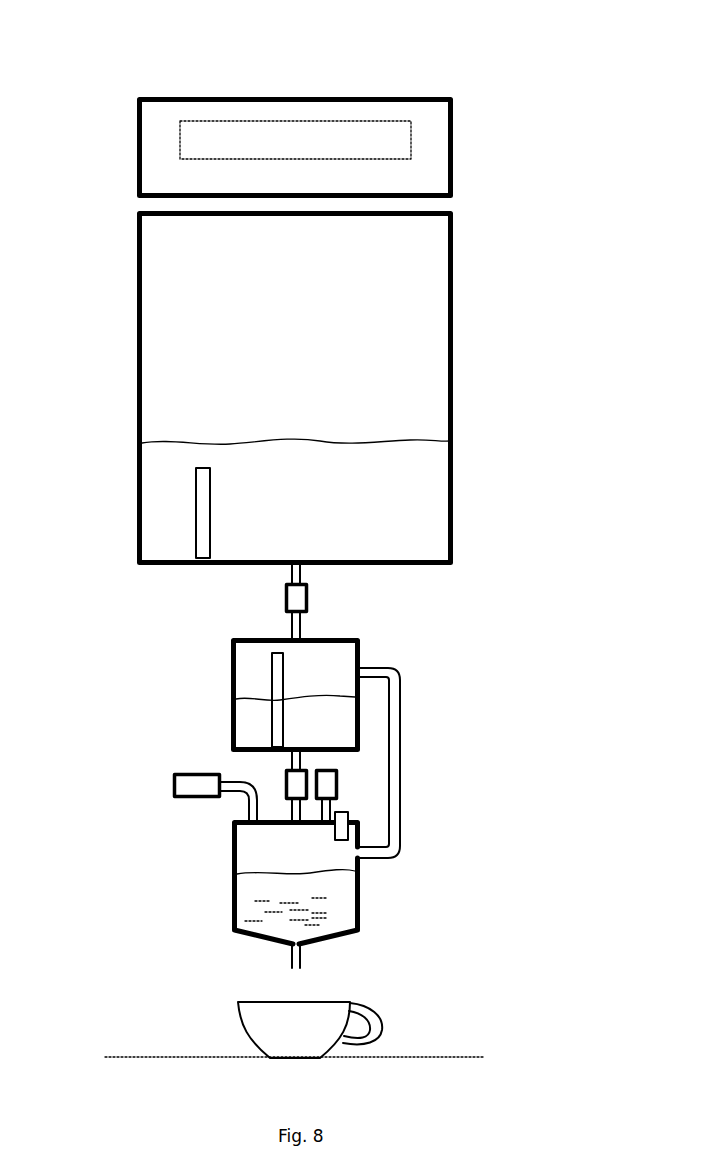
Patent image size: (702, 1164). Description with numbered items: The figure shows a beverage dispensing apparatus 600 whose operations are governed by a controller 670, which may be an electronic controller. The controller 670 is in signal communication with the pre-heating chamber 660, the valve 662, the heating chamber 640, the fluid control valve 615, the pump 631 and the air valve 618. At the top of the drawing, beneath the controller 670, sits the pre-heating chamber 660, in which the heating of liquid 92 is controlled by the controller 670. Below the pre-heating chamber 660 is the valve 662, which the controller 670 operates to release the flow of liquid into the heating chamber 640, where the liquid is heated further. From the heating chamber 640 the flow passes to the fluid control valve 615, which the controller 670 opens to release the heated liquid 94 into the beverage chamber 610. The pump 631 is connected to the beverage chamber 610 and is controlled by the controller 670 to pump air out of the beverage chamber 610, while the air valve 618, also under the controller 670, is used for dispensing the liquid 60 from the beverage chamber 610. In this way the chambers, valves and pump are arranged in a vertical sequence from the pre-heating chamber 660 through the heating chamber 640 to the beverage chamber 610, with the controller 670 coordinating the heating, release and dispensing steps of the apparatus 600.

The beverage dispensing apparatus 600 is at (630, 36).
The controller 670 is at (154, 148).
The pre-heating chamber 660 is at (366, 388).
The liquid 92 is at (377, 511).
The valve 662 is at (300, 598).
The heating chamber 640 is at (227, 695).
The liquid 94 is at (220, 683).
The fluid control valve 615 is at (290, 784).
The air valve 618 is at (328, 785).
The pump 631 is at (190, 788).
The beverage chamber 610 is at (277, 890).
The liquid 60 is at (340, 906).